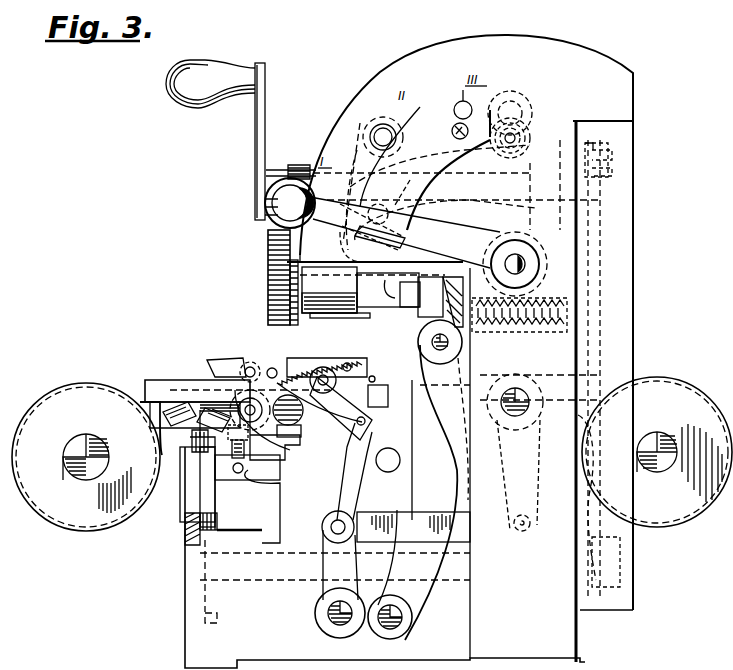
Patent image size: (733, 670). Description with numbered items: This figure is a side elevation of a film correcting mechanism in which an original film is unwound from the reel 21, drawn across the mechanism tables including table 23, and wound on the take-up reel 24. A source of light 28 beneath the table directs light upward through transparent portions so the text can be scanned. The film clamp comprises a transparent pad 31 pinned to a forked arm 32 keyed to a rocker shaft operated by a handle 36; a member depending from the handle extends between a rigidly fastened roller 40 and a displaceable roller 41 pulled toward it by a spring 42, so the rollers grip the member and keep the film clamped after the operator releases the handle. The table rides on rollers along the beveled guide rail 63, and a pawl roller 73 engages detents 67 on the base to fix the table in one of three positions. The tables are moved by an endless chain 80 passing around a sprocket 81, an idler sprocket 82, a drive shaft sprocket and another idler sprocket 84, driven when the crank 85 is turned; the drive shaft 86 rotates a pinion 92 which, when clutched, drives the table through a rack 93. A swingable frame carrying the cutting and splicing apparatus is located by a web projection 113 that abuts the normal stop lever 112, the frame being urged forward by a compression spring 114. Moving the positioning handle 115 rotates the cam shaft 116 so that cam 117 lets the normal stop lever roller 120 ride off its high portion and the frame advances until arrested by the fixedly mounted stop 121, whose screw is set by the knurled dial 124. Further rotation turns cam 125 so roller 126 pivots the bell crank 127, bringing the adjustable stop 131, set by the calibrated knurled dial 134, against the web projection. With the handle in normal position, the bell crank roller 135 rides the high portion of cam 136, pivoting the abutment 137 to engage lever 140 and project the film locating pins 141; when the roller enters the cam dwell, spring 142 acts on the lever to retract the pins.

The crank 85 is at (203, 75).
The positioning handle 115 is at (270, 214).
The web projection 113 is at (438, 290).
The cam shaft 116 is at (525, 264).
The normal stop lever 112 is at (420, 118).
The normal stop lever roller 120 is at (524, 100).
The roller 126 is at (526, 132).
The cam 117 is at (532, 150).
The bell crank 127 is at (440, 175).
The cam 125 is at (537, 222).
The endless chain 80 is at (590, 242).
The sprocket 81 is at (597, 158).
The idler sprocket 82 is at (600, 590).
The idler sprocket 84 is at (625, 455).
The compression spring 114 is at (522, 333).
The mechanism table 23 is at (597, 375).
The drive shaft 86 is at (516, 575).
The calibrated knurled dial 134 is at (268, 306).
The knurled dial 124 is at (289, 326).
The fixedly mounted stop 121 is at (318, 318).
The adjustable stop 131 is at (346, 318).
The film locating pins 141 is at (392, 307).
The cam 136 is at (425, 332).
The bell crank roller 135 is at (426, 350).
The abutment 137 is at (345, 493).
The source of light 28 is at (386, 473).
The spring 142 is at (322, 410).
The lever 140 is at (370, 424).
The forked arm 32 is at (322, 364).
The handle 36 is at (235, 365).
The transparent pad 31 is at (279, 366).
The rigidly fastened roller 40 is at (255, 416).
The displaceable roller 41 is at (304, 430).
The spring 42 is at (286, 452).
The guide rail 63 is at (195, 470).
The detents 67 is at (248, 458).
The roller 73 is at (250, 480).
The rack 93 is at (214, 502).
The pinion 92 is at (218, 523).
The reel 21 is at (78, 522).
The take-up reel 24 is at (668, 517).